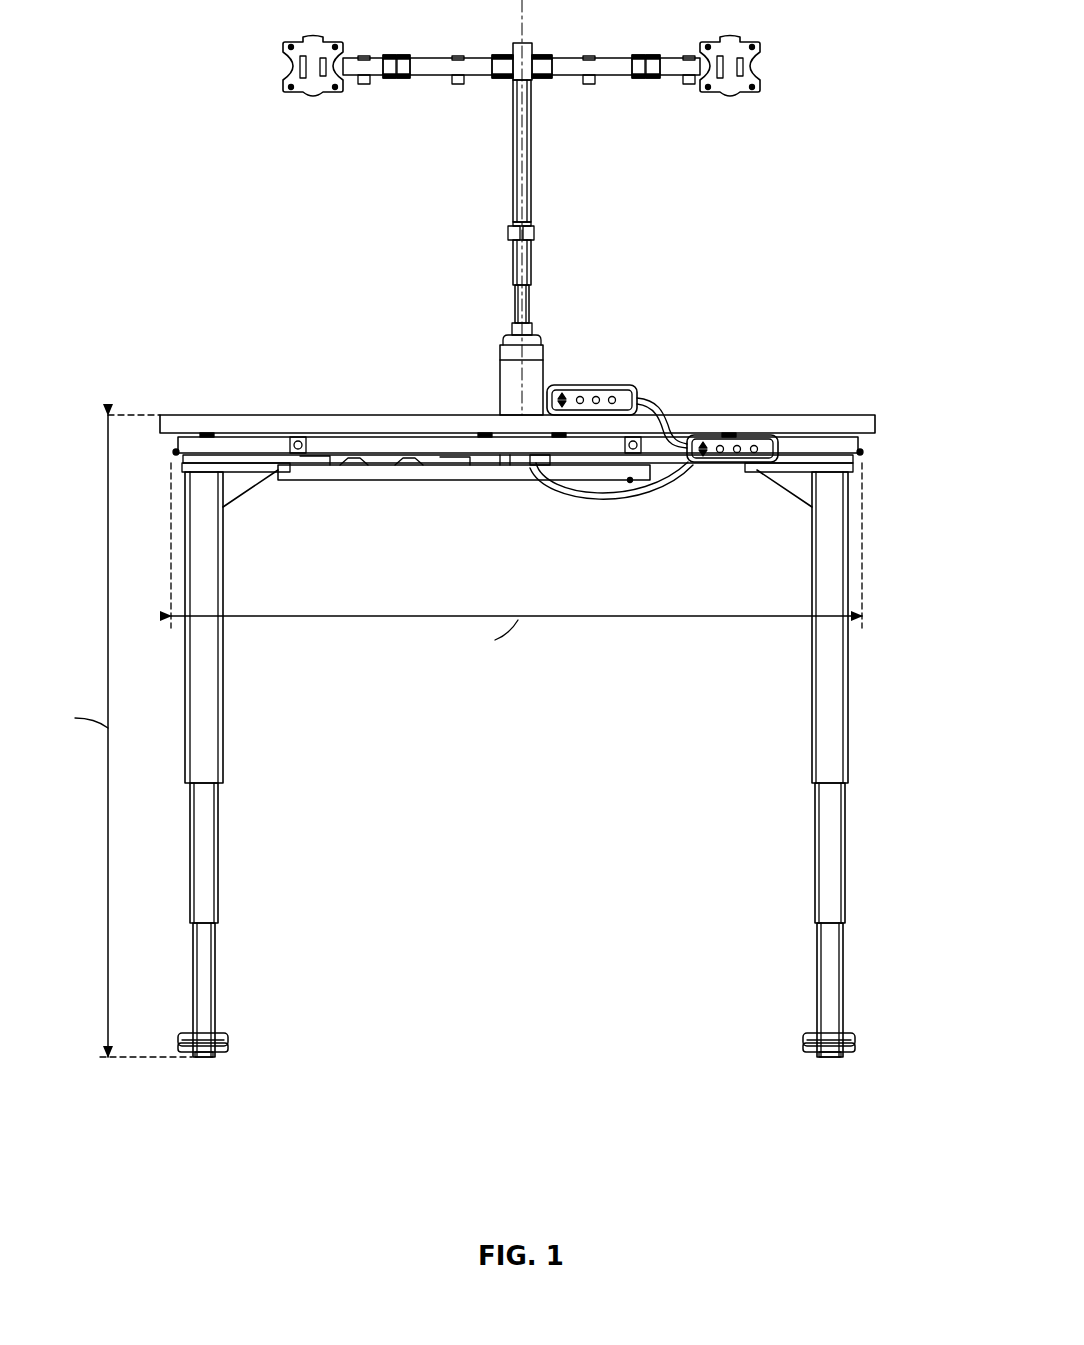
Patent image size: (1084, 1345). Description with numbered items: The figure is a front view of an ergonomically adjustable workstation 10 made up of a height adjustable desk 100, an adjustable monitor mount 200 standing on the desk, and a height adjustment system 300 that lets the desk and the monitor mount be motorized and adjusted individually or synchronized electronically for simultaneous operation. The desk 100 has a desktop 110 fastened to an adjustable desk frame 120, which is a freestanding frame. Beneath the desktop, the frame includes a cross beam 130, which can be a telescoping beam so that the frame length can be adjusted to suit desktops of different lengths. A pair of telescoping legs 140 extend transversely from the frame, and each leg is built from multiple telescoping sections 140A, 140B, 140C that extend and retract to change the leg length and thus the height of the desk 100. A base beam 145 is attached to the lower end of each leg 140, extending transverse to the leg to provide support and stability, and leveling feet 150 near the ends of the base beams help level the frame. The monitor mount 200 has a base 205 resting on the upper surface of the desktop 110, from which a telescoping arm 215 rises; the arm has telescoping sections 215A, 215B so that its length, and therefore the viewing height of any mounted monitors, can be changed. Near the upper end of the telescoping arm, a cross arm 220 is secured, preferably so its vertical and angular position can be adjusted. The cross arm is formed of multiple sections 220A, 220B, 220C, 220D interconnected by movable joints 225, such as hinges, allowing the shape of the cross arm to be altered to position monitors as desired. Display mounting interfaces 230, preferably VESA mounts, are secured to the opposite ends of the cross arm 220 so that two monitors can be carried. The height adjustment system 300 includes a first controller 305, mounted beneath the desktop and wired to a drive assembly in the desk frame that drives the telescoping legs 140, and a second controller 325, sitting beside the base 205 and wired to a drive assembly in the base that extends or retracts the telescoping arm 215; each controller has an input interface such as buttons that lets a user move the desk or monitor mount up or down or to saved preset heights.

The ergonomically adjustable workstation 10 is at (228, 198).
The height adjustable desk 100 is at (198, 398).
The desktop 110 is at (357, 420).
The adjustable desk frame 120 is at (310, 490).
The cross beam 130 is at (398, 445).
The telescoping leg 140 is at (226, 754).
The telescoping section 140A is at (210, 677).
The telescoping section 140B is at (210, 850).
The telescoping section 140C is at (210, 978).
The base beam 145 is at (228, 1043).
The leveling foot 150 is at (205, 1058).
The adjustable monitor mount 200 is at (492, 278).
The base 205 is at (500, 388).
The telescoping arm 215 is at (511, 175).
The telescoping section 215A is at (534, 188).
The telescoping section 215B is at (532, 302).
The cross arm 220 is at (563, 86).
The cross arm section 220A is at (348, 72).
The cross arm section 220B is at (430, 72).
The cross arm section 220C is at (617, 72).
The cross arm section 220D is at (668, 72).
The movable joint 225 is at (397, 55).
The display mounting interface 230 is at (293, 75).
The height adjustment system 300 is at (690, 478).
The first controller 305 is at (765, 440).
The second controller 325 is at (615, 390).